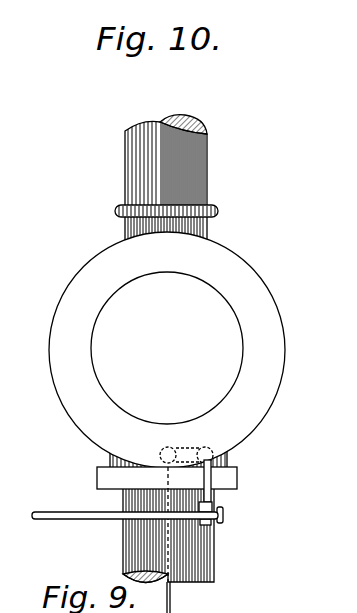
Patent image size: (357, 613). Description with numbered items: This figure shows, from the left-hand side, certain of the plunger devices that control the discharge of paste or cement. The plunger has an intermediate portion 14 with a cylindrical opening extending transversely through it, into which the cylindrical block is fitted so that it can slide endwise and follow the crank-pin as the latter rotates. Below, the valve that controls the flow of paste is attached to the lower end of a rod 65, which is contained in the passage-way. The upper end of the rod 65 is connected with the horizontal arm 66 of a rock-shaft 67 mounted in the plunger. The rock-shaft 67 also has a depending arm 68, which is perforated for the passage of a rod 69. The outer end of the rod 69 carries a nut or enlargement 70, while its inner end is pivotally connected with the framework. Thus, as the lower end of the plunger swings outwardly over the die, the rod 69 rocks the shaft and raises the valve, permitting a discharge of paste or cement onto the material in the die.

The intermediate portion 14 is at (273, 295).
The rod 65 is at (172, 596).
The horizontal arm 66 is at (186, 452).
The rock-shaft 67 is at (214, 459).
The depending arm 68 is at (212, 480).
The rod 69 is at (107, 520).
The nut or enlargement 70 is at (223, 517).